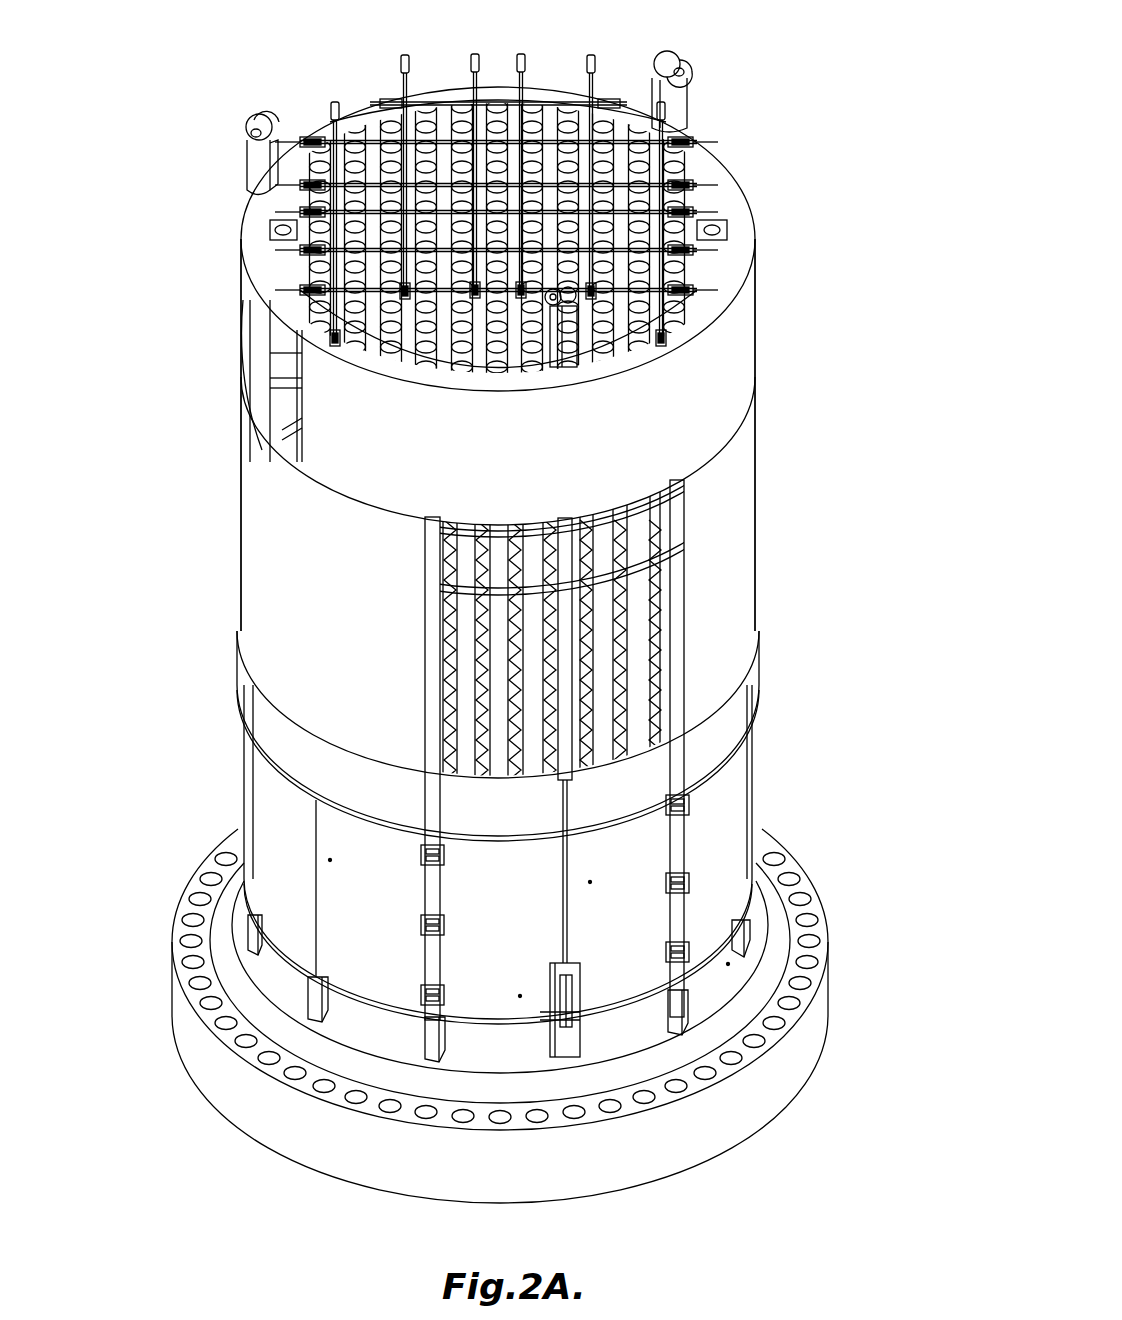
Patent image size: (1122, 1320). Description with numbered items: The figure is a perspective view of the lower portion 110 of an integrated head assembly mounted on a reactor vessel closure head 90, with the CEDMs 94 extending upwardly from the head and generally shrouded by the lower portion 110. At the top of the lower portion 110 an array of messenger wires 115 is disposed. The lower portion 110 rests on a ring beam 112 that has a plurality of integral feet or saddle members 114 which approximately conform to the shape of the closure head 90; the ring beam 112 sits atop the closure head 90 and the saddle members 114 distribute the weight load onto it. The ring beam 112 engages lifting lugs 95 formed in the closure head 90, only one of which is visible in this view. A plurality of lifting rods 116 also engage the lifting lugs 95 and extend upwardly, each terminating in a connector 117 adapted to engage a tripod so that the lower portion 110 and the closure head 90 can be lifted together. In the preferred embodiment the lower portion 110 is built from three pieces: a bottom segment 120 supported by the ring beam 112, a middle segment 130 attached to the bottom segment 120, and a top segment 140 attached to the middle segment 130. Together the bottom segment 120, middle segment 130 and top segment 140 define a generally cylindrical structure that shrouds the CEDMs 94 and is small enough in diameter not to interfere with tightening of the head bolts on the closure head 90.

The reactor vessel closure head 90 is at (790, 1080).
The CEDMs 94 is at (603, 190).
The lifting lugs 95 is at (563, 1022).
The lower portion 110 is at (808, 430).
The ring beam 112 is at (714, 965).
The saddle members 114 is at (245, 927).
The messenger wires 115 is at (473, 118).
The lifting rods 116 is at (562, 970).
The connector 117 is at (260, 160).
The bottom segment 120 is at (757, 778).
The middle segment 130 is at (757, 510).
The top segment 140 is at (755, 297).